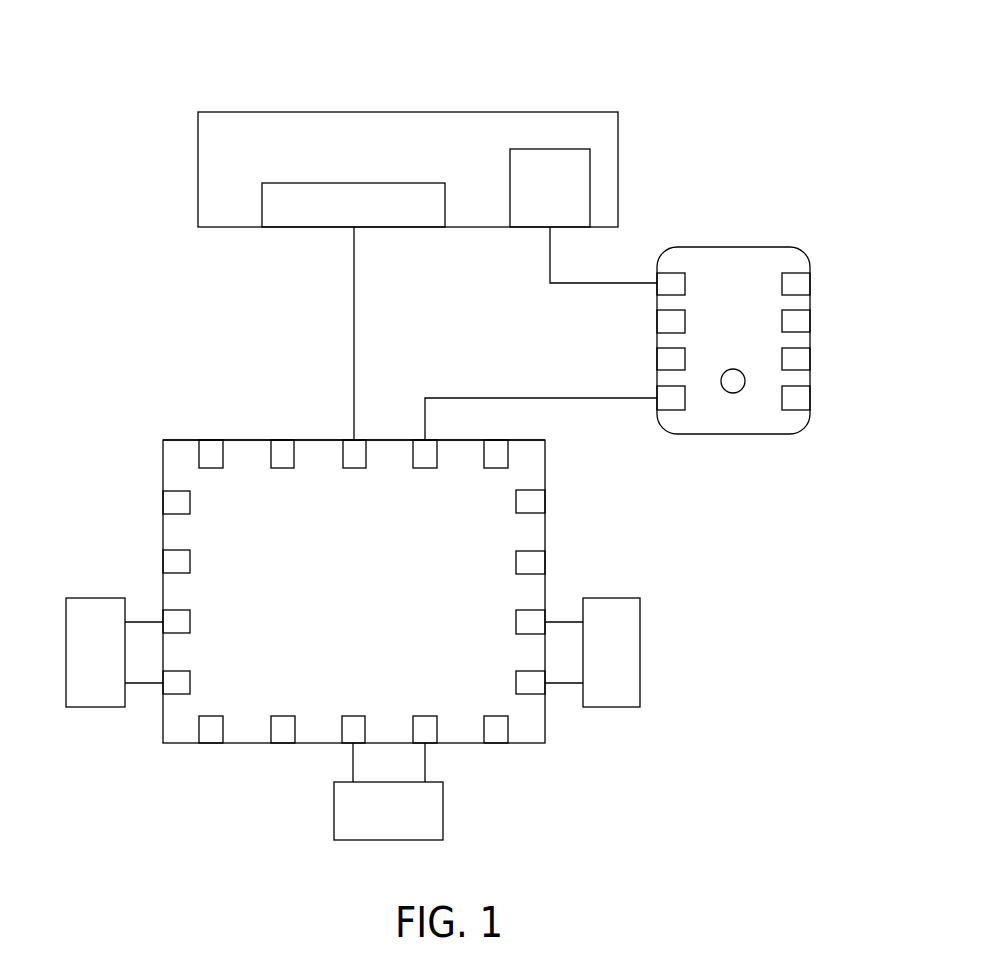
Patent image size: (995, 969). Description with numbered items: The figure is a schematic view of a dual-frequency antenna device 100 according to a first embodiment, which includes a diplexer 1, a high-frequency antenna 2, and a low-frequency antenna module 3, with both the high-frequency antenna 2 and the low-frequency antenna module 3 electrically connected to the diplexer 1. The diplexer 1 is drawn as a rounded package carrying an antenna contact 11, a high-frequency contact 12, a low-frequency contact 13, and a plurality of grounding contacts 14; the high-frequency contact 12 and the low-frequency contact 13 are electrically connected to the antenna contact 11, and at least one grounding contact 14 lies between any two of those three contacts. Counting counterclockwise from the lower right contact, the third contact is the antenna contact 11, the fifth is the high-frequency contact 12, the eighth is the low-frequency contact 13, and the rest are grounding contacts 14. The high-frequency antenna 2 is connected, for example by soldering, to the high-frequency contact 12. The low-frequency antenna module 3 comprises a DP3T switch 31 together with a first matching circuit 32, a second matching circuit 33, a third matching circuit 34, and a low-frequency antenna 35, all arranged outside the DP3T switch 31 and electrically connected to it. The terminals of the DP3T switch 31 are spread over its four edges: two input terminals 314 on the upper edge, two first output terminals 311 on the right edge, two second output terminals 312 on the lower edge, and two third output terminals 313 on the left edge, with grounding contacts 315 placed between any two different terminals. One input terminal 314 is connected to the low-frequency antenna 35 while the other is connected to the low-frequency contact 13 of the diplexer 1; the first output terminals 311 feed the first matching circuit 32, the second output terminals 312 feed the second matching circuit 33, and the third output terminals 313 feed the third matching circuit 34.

The dual-frequency antenna device 100 is at (103, 36).
The diplexer 1 is at (742, 246).
The antenna contact 11 is at (801, 323).
The high-frequency contact 12 is at (674, 281).
The low-frequency contact 13 is at (675, 403).
The grounding contacts 14 is at (668, 322).
The high-frequency antenna 2 is at (592, 187).
The low-frequency antenna module 3 is at (560, 474).
The DP3T switch 31 is at (186, 442).
The first output terminals 311 is at (176, 680).
The second output terminals 312 is at (418, 728).
The third output terminals 313 is at (530, 624).
The input terminals 314 is at (424, 458).
The grounding contacts 315 is at (214, 462).
The first matching circuit 32 is at (97, 596).
The second matching circuit 33 is at (332, 810).
The third matching circuit 34 is at (612, 596).
The low-frequency antenna 35 is at (303, 229).